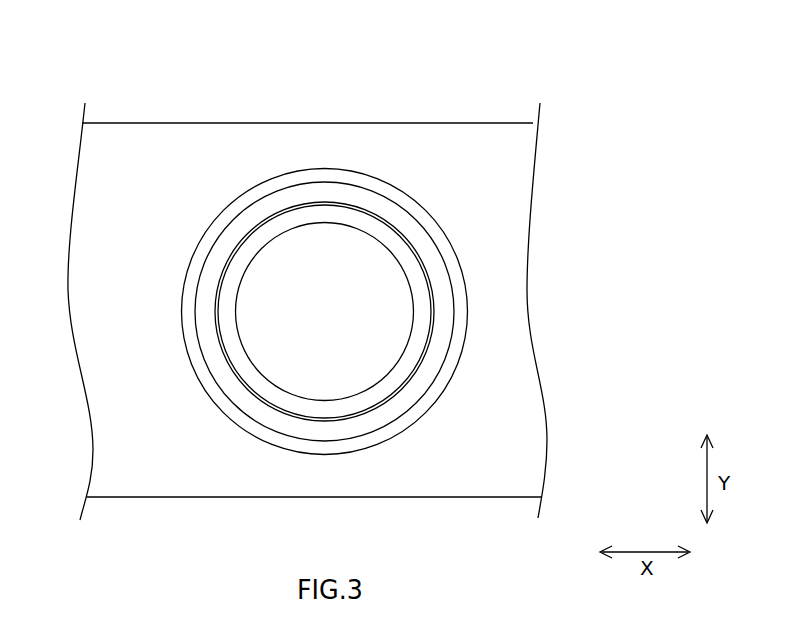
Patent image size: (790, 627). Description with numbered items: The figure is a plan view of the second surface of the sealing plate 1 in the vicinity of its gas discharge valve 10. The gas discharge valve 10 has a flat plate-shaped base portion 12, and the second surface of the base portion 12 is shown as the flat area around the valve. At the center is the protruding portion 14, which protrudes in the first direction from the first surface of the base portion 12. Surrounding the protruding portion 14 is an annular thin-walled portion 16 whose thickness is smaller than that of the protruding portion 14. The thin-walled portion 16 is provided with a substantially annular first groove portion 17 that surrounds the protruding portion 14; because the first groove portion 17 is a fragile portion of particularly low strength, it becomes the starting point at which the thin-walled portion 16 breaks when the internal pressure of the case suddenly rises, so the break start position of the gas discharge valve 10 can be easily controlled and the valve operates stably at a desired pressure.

The sealing plate 1 is at (26, 31).
The gas discharge valve 10 is at (253, 171).
The base portion 12 is at (512, 187).
The protruding portion 14 is at (302, 358).
The thin-walled portion 16 is at (217, 253).
The first groove portion 17 is at (372, 207).